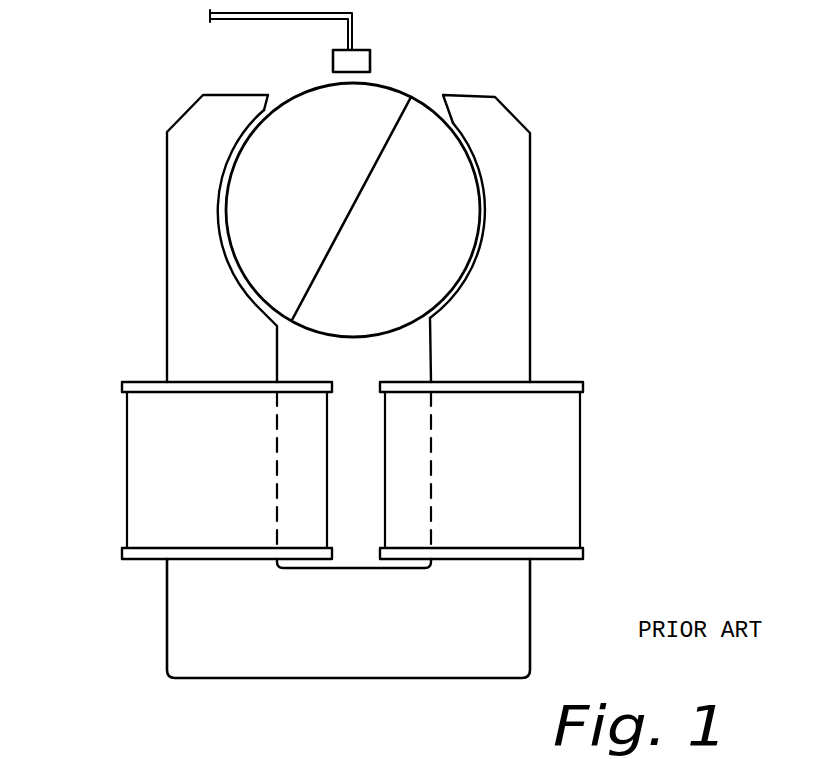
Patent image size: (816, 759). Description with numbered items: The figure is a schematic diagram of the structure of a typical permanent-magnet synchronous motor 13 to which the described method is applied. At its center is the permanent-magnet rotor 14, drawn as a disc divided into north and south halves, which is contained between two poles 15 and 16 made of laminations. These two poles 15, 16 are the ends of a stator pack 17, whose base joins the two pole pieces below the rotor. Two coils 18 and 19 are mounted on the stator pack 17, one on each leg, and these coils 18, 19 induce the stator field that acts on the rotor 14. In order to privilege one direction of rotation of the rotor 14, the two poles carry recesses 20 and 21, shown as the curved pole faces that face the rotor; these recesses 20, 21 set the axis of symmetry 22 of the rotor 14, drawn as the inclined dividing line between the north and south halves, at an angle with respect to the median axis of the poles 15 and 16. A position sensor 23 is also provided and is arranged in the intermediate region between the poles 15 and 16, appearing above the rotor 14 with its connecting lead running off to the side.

The motor with permanent-magnet rotor 13 is at (157, 98).
The rotor 14 is at (453, 222).
The pole 15 is at (503, 305).
The pole 16 is at (188, 143).
The stator pack 17 is at (502, 627).
The coil 18 is at (540, 457).
The coil 19 is at (145, 452).
The recess 20 is at (466, 133).
The recess 21 is at (247, 298).
The axis of symmetry 22 is at (398, 113).
The position sensor 23 is at (353, 62).